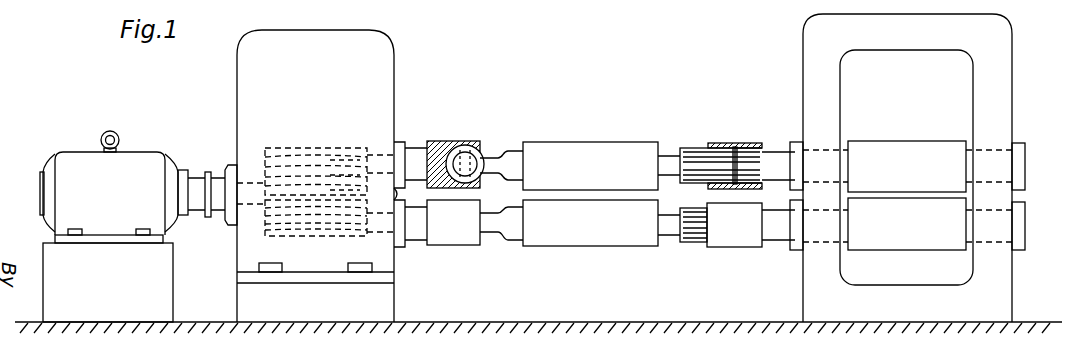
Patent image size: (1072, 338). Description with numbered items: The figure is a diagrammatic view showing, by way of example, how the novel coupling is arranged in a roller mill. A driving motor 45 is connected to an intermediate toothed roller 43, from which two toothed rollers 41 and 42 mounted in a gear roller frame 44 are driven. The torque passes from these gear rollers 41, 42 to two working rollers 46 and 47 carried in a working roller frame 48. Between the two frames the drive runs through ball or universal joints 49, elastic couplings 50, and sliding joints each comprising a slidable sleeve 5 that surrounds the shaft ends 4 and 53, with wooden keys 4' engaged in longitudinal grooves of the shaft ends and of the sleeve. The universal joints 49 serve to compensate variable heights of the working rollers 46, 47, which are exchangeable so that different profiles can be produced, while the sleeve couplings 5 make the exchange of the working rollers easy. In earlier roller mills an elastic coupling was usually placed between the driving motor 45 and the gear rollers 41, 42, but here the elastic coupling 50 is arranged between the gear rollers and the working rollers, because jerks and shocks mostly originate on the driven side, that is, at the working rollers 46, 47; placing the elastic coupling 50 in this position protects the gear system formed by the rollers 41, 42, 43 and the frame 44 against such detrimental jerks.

The shaft end 4 is at (713, 189).
The wooden keys 4' is at (713, 195).
The slidable sleeve 5 is at (722, 143).
The toothed roller 41 is at (268, 152).
The toothed roller 42 is at (268, 232).
The intermediate toothed roller 43 is at (372, 175).
The gear roller frame 44 is at (250, 53).
The driving motor 45 is at (143, 158).
The working roller 46 is at (894, 148).
The working roller 47 is at (915, 245).
The working roller frame 48 is at (810, 277).
The universal joint 49 is at (462, 133).
The elastic coupling 50 is at (533, 210).
The shaft end 53 is at (775, 157).